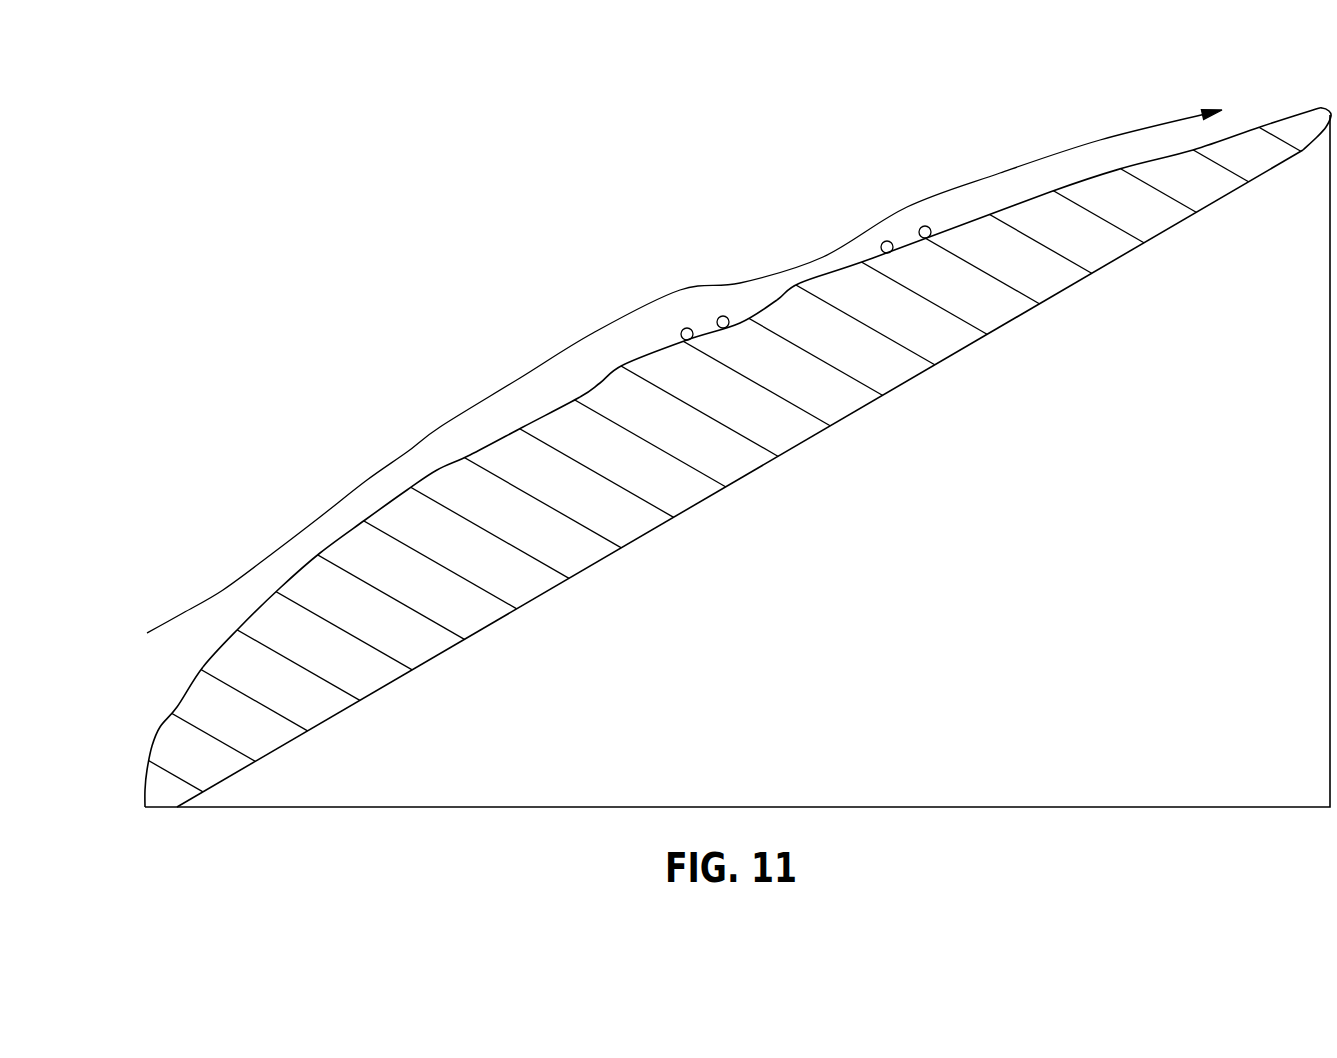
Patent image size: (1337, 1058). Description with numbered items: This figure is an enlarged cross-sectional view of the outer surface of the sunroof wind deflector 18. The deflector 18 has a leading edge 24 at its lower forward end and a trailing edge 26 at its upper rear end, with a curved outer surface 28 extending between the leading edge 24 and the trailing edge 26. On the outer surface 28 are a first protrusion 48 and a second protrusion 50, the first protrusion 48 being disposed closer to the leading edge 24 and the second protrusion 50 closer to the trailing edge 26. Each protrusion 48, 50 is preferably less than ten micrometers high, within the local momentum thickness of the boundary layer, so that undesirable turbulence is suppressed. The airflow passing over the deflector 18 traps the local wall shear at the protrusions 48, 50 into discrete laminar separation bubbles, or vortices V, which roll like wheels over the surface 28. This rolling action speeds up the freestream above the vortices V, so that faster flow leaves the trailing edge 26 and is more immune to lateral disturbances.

The sunroof wind deflector 18 is at (402, 678).
The leading edge 24 is at (145, 782).
The trailing edge 26 is at (1287, 118).
The outer surface 28 is at (437, 470).
The first protrusion 48 is at (617, 368).
The second protrusion 50 is at (822, 273).
The vortices V is at (688, 328).